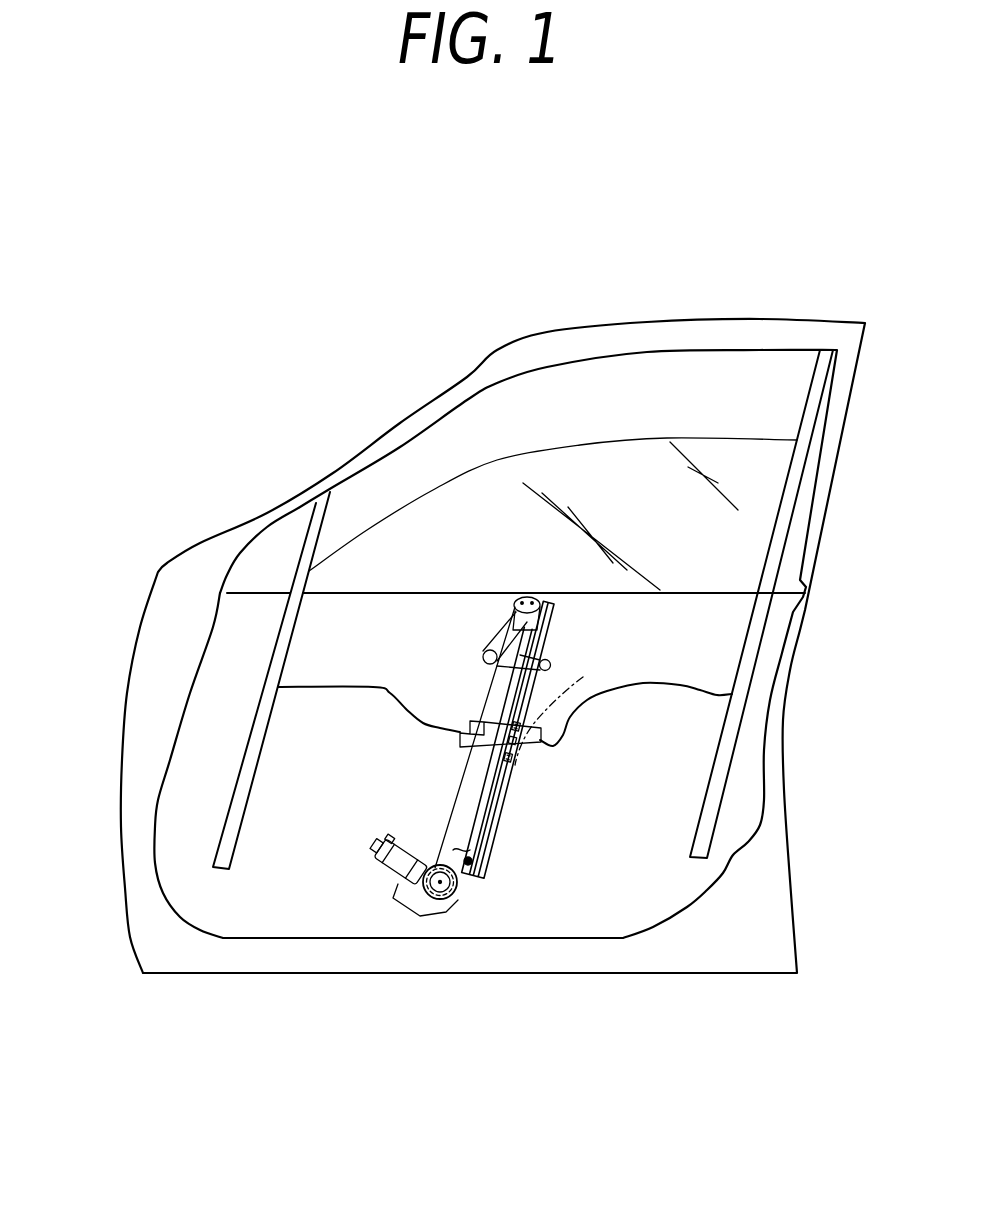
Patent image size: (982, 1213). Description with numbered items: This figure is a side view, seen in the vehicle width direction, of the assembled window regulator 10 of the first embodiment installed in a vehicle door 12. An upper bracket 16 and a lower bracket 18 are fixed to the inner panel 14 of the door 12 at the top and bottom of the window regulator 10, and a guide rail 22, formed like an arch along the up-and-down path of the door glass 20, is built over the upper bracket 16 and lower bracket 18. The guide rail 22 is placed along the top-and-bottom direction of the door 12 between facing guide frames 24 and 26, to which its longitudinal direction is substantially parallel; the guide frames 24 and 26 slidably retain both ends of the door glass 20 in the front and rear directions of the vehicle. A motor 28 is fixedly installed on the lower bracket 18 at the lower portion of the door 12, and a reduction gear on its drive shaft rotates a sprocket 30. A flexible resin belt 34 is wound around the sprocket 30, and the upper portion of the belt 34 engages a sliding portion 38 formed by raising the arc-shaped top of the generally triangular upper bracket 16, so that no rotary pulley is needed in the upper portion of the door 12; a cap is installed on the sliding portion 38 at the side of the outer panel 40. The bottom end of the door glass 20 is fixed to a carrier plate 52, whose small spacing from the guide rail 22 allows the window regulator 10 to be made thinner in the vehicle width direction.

The window regulator 10 is at (518, 808).
The vehicle door 12 is at (455, 677).
The inner panel 14 is at (545, 917).
The upper bracket 16 is at (547, 656).
The lower bracket 18 is at (400, 908).
The door glass 20 is at (688, 667).
The guide rail 22 is at (492, 851).
The guide frame 24 is at (236, 801).
The guide frame 26 is at (714, 789).
The motor 28 is at (387, 880).
The sprocket 30 is at (447, 899).
The belt 34 is at (465, 763).
The sliding portion 38 is at (511, 622).
The outer panel 40 is at (130, 813).
The carrier plate 52 is at (567, 710).